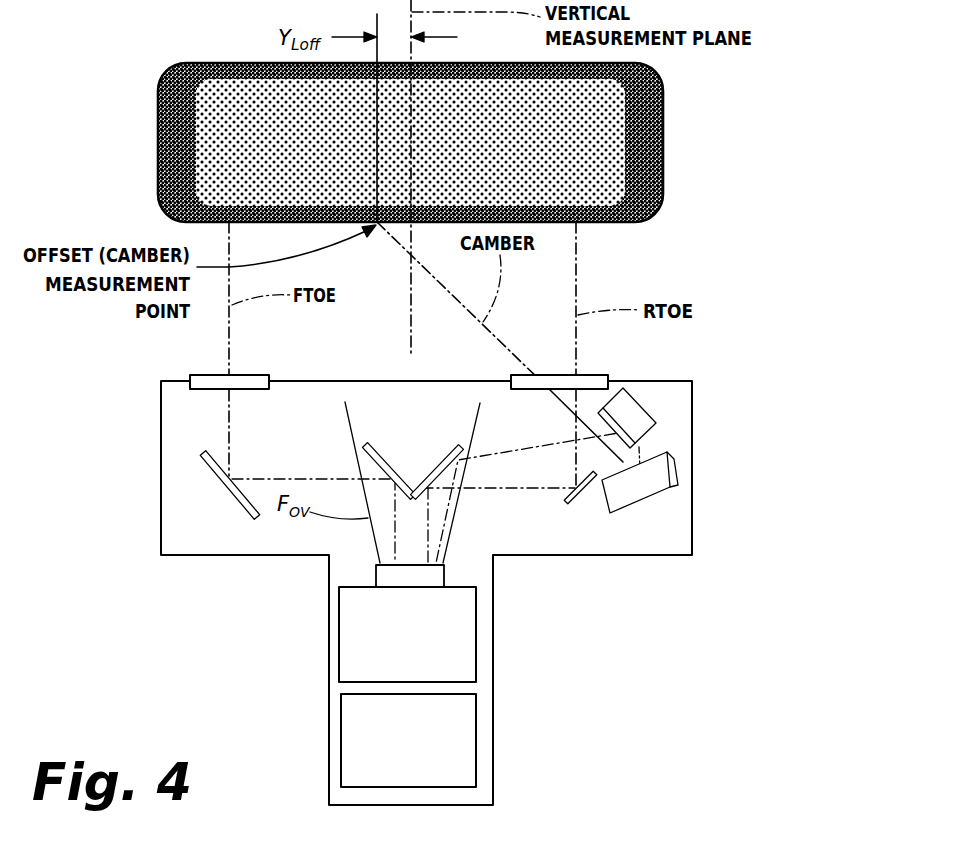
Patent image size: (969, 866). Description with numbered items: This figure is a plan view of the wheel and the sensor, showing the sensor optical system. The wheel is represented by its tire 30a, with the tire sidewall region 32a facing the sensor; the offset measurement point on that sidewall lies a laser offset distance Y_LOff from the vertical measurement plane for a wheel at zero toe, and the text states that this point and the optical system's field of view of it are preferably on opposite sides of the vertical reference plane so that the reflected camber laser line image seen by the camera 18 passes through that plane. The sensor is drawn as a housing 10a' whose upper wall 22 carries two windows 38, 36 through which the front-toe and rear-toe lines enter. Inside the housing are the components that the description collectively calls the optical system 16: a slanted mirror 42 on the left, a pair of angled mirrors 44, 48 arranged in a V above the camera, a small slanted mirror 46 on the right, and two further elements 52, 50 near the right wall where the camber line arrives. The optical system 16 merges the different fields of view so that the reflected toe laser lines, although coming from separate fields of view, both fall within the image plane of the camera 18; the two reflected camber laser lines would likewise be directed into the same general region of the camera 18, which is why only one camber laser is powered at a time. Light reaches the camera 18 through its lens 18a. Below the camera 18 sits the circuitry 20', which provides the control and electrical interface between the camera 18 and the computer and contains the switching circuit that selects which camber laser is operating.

The tire 30a is at (663, 168).
The tire sidewall edge 32a is at (595, 226).
The housing top surface 22 is at (368, 380).
The front toe window 38 is at (190, 377).
The rear toe window 36 is at (598, 375).
The camber light source 52 is at (633, 412).
The optical system 16 is at (655, 441).
The light source 50 is at (648, 500).
The front mirror 42 is at (238, 504).
The left V mirror 44 is at (400, 468).
The right V mirror 48 is at (432, 468).
The rear mirror 46 is at (577, 498).
The camera lens 18a is at (443, 568).
The camera 18 is at (424, 622).
The circuitry 20' is at (408, 740).
The sensor housing 10a' is at (426, 593).